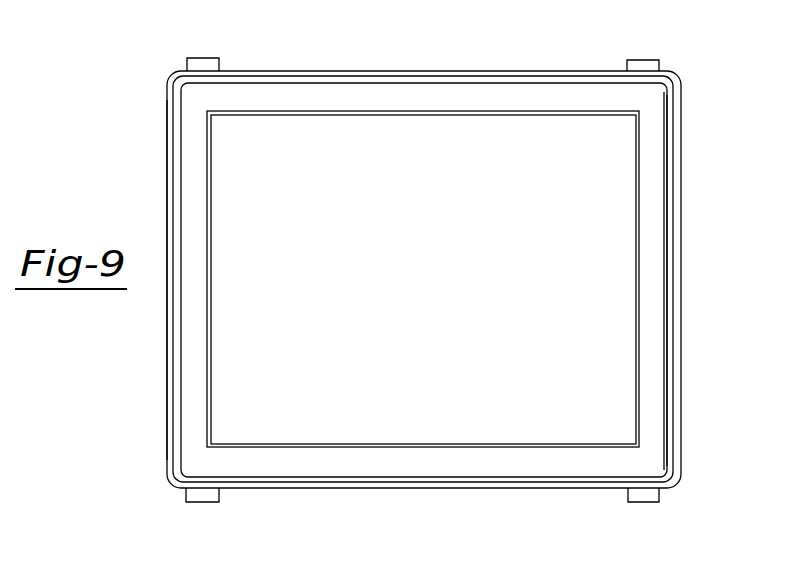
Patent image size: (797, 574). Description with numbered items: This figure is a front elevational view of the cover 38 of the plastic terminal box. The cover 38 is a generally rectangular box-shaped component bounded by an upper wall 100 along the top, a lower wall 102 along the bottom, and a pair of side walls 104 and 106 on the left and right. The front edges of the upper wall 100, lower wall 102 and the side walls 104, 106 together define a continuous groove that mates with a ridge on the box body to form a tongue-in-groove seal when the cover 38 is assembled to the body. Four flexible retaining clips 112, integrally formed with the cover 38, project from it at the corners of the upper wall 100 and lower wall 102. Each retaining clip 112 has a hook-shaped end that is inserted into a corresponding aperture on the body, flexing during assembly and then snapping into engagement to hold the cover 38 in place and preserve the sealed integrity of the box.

The cover 38 is at (368, 56).
The upper wall 100 is at (452, 79).
The lower wall 102 is at (384, 489).
The side wall 104 is at (166, 383).
The side wall 106 is at (680, 268).
The flexible retaining clips 112 is at (216, 65).